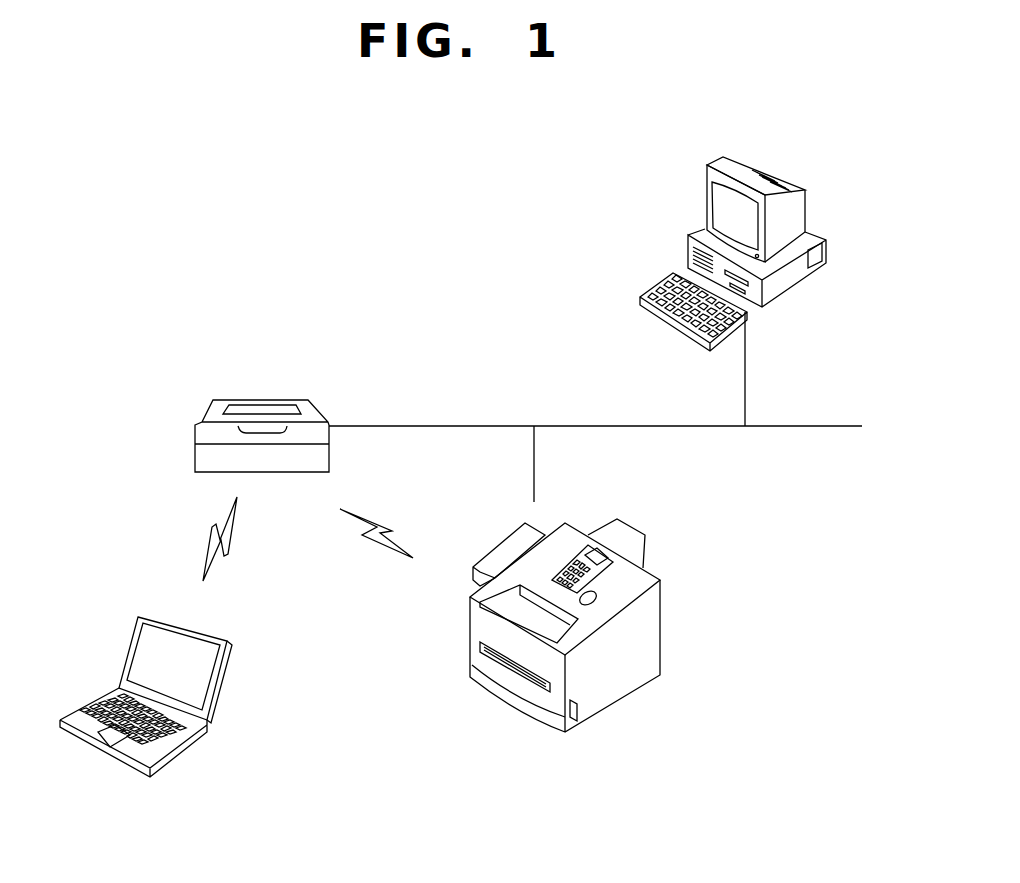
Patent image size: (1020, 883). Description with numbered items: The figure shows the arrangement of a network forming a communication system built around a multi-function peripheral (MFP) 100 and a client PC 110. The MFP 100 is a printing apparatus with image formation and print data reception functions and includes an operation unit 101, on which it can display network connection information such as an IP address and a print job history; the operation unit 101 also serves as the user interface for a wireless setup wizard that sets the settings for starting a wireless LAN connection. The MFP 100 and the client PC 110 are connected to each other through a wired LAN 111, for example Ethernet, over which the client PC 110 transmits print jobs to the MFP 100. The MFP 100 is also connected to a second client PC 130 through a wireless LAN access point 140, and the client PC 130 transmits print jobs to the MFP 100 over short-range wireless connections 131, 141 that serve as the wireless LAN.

The multi-function peripheral (MFP) 100 is at (623, 697).
The operation unit 101 is at (623, 525).
The client PC 110 is at (822, 165).
The wired LAN 111 is at (813, 428).
The client PC 130 is at (225, 656).
The short-range wireless connection 131 is at (208, 537).
The wireless LAN access point (AP) 140 is at (297, 400).
The short-range wireless connection 141 is at (380, 527).